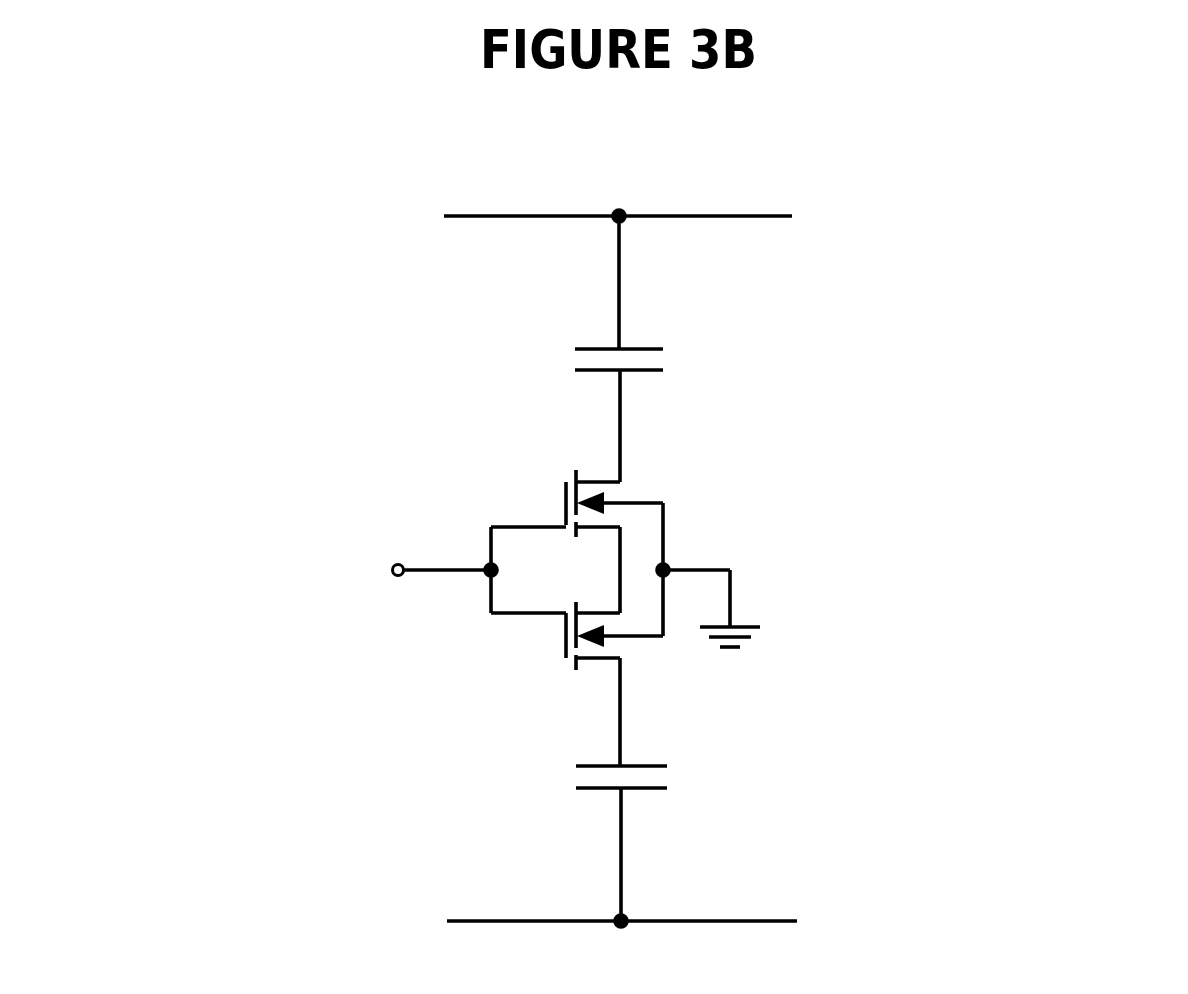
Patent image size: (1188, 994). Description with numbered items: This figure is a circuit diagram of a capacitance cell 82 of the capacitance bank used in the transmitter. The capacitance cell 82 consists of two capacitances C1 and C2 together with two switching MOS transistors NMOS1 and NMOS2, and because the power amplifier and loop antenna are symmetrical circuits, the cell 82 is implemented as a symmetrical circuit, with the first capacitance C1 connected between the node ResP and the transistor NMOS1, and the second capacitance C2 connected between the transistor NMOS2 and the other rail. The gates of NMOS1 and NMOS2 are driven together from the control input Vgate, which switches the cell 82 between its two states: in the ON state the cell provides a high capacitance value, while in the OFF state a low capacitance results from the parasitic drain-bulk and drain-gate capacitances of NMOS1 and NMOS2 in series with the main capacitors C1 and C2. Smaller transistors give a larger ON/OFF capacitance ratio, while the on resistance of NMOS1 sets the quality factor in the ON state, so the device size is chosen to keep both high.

The capacitance cell 82 is at (1010, 325).
The first capacitance C1 is at (643, 360).
The second capacitance C2 is at (645, 777).
The switching MOS transistor NMOS1 is at (551, 503).
The switching MOS transistor NMOS2 is at (551, 636).
The resonator node ResP is at (618, 194).
The gate control input Vgate ON/OFF Vgate is at (414, 569).